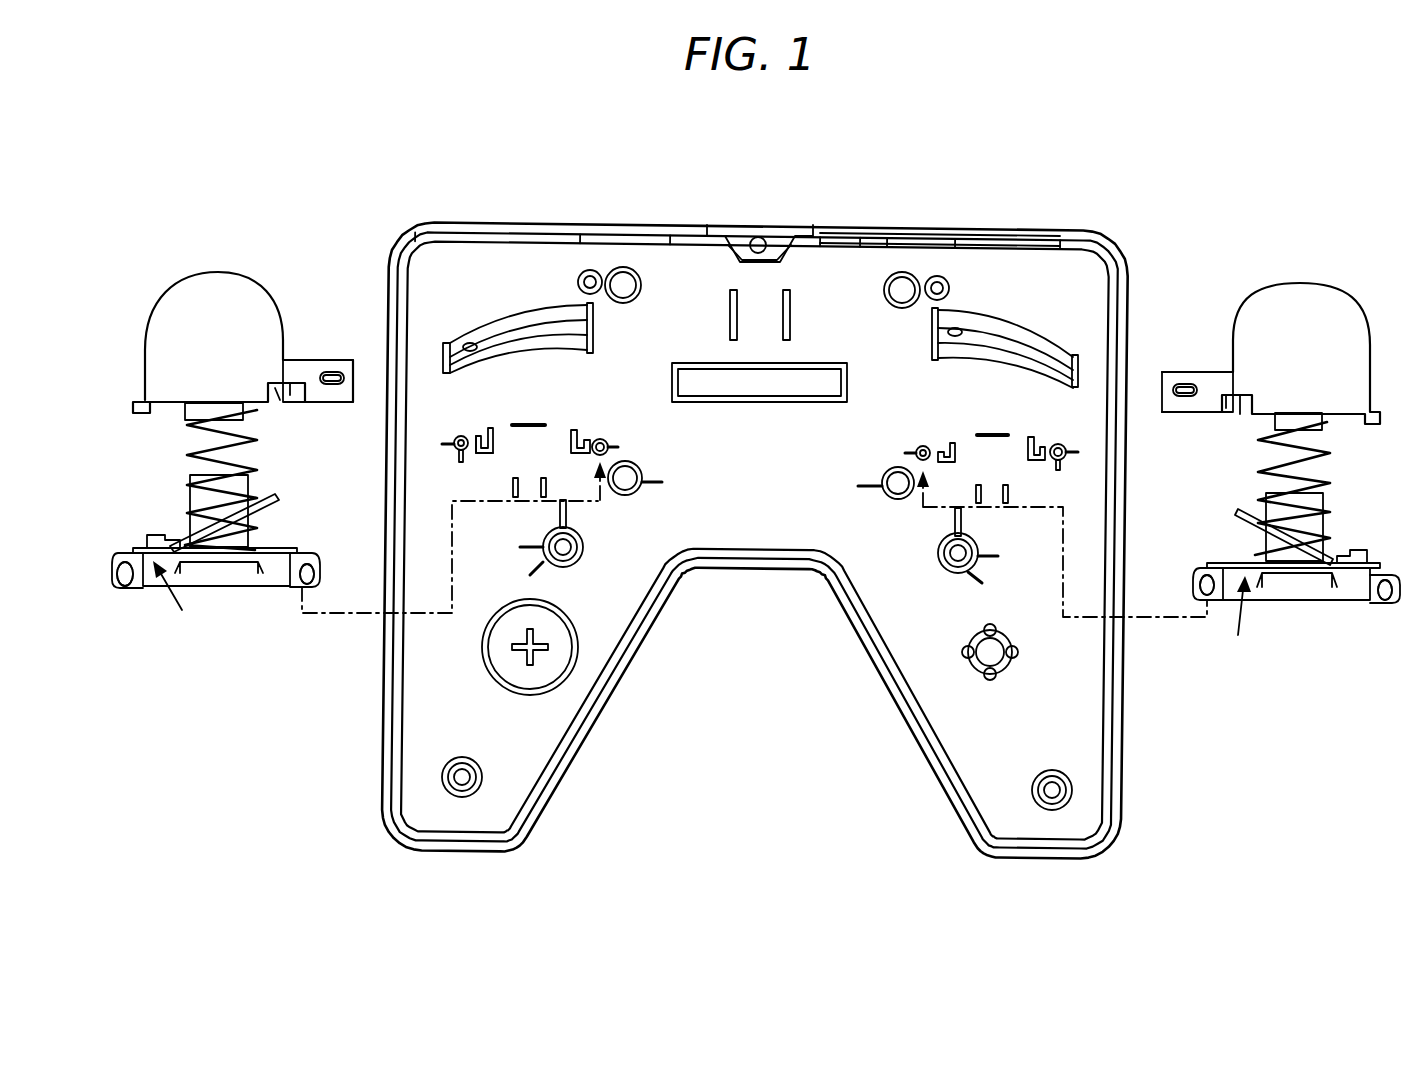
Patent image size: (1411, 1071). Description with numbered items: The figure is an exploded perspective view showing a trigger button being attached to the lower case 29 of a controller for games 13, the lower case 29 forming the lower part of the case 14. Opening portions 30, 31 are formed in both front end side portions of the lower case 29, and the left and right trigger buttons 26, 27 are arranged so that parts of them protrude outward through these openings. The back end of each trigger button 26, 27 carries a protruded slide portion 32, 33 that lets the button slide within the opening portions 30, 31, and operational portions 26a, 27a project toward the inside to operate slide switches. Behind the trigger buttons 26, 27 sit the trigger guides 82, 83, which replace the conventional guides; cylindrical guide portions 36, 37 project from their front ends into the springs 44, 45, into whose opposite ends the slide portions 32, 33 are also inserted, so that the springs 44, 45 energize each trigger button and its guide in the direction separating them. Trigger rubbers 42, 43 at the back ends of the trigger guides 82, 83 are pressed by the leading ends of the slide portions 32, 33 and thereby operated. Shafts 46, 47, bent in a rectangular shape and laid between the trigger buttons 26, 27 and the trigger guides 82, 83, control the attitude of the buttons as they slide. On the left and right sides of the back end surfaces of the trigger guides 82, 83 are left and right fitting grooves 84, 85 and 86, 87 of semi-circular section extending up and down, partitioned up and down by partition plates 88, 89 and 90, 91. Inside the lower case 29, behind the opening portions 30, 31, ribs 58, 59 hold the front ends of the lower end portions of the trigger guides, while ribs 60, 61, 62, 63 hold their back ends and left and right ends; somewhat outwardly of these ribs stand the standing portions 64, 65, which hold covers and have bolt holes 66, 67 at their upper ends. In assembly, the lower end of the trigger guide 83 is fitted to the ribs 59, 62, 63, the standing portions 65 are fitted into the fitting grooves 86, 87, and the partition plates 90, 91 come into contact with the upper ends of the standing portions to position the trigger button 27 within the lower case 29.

The controller for games 13 is at (765, 206).
The case 14 is at (840, 219).
The left trigger button 26 is at (222, 272).
The operational portion 26a is at (333, 360).
The right trigger button 27 is at (1252, 300).
The operational portion 27a is at (1185, 372).
The lower case 29 is at (1128, 767).
The opening portion 30 is at (470, 345).
The opening portion 31 is at (953, 440).
The slide portion 32 is at (213, 410).
The slide portion 33 is at (1285, 415).
The cylindrical guide portion 36 is at (197, 510).
The cylindrical guide portion 37 is at (1275, 500).
The trigger rubber 42 is at (225, 567).
The trigger rubber 43 is at (1298, 580).
The spring 44 is at (187, 438).
The spring 45 is at (1330, 480).
The shaft 46 is at (278, 495).
The shaft 47 is at (1325, 528).
The rib 58 is at (527, 423).
The rib 59 is at (1037, 440).
The rib 60 is at (480, 455).
The rib 61 is at (587, 438).
The rib 62 is at (992, 430).
The rib 63 is at (1058, 444).
The standing portion 64 is at (447, 450).
The standing portion 65 is at (913, 443).
The bolt hole 66 is at (457, 436).
The bolt hole 67 is at (890, 472).
The trigger guide 82 is at (177, 601).
The trigger guide 83 is at (1239, 620).
The fitting groove 84 is at (123, 587).
The fitting groove 85 is at (307, 565).
The fitting groove 86 is at (1203, 570).
The fitting groove 87 is at (1377, 597).
The partition plate 88 is at (132, 578).
The partition plate 89 is at (300, 573).
The partition plate 90 is at (1220, 578).
The partition plate 91 is at (1383, 600).